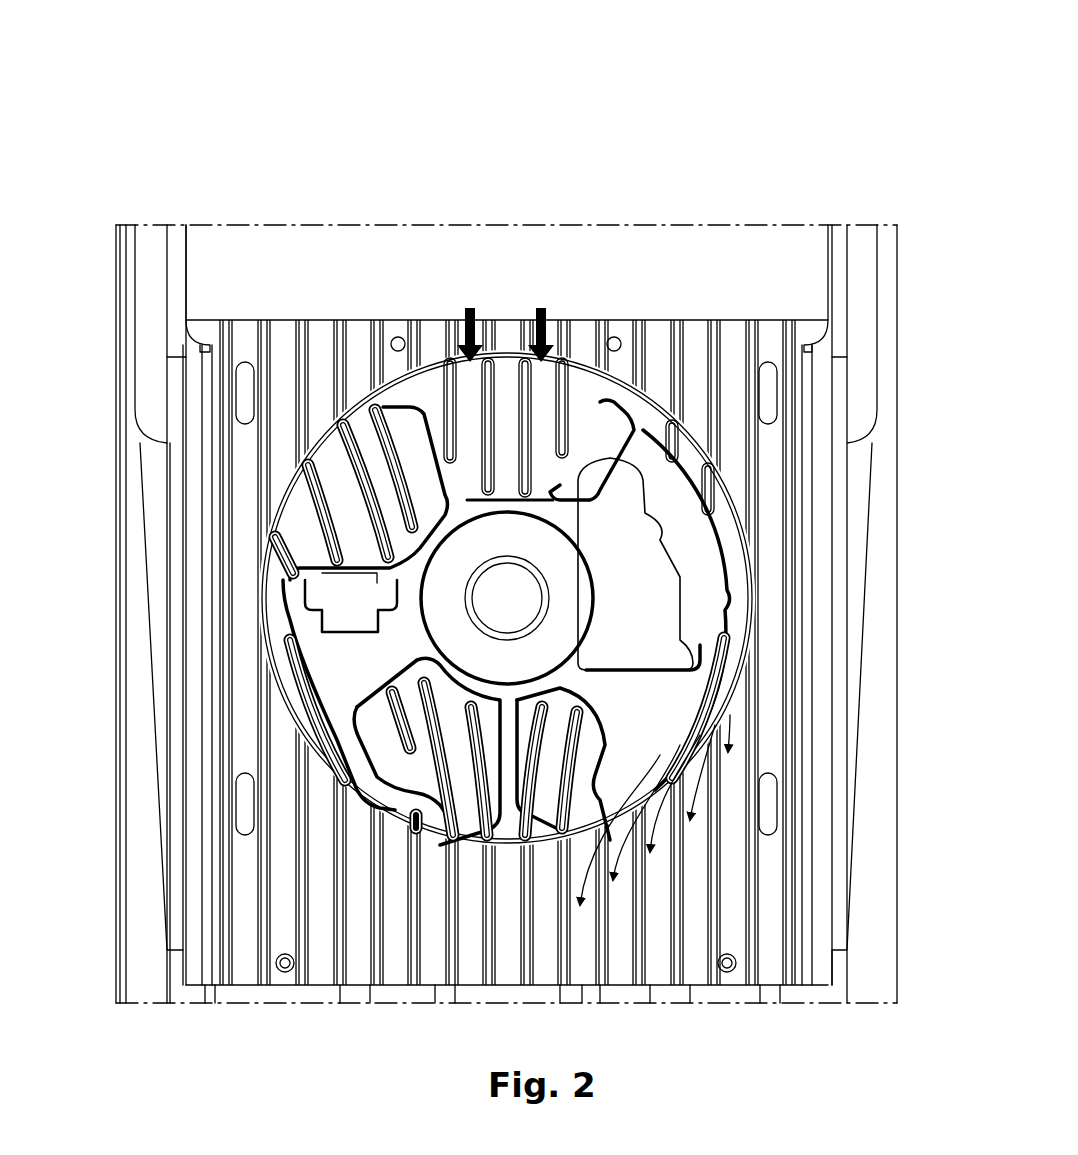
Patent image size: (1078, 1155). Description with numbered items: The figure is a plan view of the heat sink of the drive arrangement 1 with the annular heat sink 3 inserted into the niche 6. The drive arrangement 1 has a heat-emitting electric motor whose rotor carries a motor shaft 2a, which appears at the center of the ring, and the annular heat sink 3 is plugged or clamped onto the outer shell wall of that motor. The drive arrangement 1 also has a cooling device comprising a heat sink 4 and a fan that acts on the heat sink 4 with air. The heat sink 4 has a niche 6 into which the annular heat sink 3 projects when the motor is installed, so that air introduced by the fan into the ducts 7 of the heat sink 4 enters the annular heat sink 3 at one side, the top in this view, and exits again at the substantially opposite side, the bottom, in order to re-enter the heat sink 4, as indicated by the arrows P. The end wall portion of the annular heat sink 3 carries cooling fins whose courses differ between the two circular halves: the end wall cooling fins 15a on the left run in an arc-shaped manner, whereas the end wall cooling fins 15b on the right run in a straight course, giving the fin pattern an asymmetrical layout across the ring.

The drive arrangement 1 is at (212, 151).
The motor shaft 2a is at (522, 611).
The annular heat sink 3 is at (597, 385).
The heat sink 4 is at (700, 283).
The niche 6 is at (364, 392).
The ducts 7 is at (507, 335).
The end wall cooling fins 15a is at (365, 470).
The end wall cooling fins 15b is at (676, 440).
The arrows P is at (650, 790).